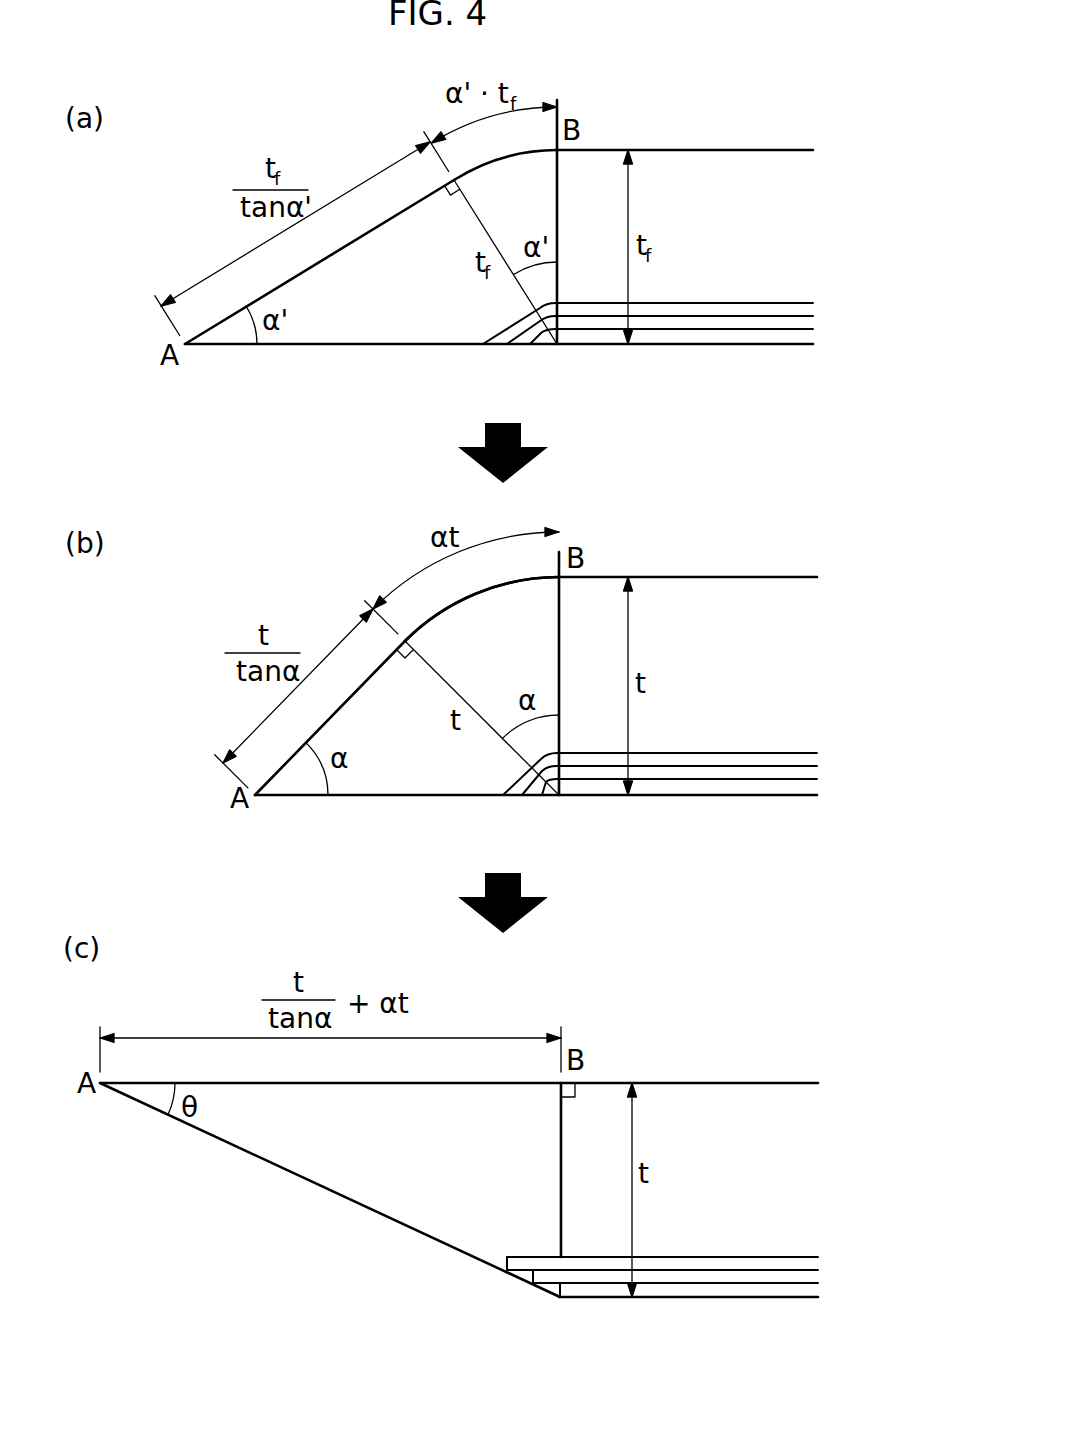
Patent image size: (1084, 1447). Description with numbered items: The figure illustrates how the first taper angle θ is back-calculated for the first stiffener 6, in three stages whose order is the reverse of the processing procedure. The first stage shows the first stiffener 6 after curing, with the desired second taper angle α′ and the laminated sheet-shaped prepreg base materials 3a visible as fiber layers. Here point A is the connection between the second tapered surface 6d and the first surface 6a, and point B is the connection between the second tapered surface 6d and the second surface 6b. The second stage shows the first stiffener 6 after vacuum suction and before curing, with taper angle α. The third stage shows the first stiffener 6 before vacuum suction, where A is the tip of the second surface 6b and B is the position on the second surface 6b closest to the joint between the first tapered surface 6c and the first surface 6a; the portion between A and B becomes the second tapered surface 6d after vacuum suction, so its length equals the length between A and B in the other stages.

The first stiffener 6 is at (787, 125).
The first surface 6a is at (717, 346).
The second surface 6b is at (710, 150).
The first tapered surface 6c is at (354, 344).
The second tapered surface 6d is at (372, 677).
The prepreg base materials (fiber layers) 3a is at (797, 305).